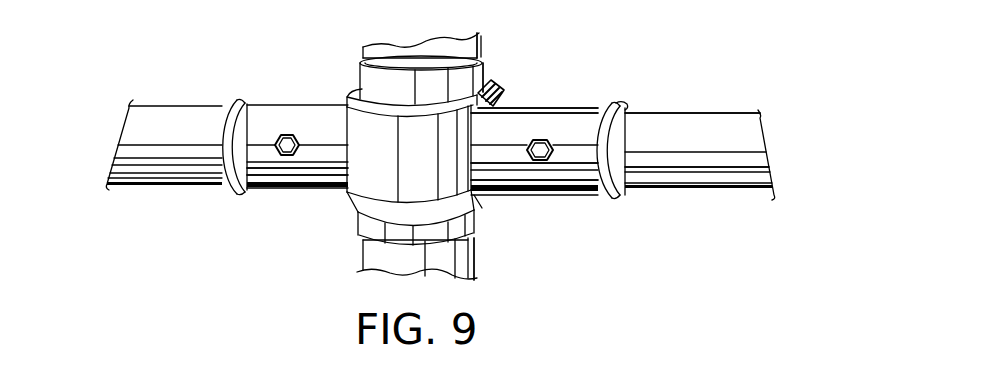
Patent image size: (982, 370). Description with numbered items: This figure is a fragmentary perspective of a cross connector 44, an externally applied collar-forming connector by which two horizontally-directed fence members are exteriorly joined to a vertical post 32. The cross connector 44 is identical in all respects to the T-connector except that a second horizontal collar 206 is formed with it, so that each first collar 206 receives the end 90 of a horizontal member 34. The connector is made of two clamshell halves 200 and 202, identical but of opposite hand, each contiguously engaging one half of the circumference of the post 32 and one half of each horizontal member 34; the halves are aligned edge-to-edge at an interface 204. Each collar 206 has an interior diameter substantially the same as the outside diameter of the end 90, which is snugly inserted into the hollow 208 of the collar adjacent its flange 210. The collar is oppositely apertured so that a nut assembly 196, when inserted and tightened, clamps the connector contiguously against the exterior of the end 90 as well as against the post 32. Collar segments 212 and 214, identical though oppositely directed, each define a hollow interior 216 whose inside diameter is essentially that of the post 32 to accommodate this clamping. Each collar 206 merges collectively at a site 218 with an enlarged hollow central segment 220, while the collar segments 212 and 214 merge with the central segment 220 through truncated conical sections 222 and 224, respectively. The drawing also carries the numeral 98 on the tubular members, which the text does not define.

The vertical post 32 is at (486, 40).
The horizontal member 34 is at (153, 103).
The cross connector 44 is at (508, 84).
The end of horizontal member 90 is at (212, 153).
The tubular member 98 is at (164, 143).
The nut assembly 196 is at (287, 131).
The clamshell half 200 is at (490, 64).
The clamshell half 202 is at (507, 167).
The interface 204 is at (534, 110).
The first collar 206 is at (262, 172).
The hollow of the sleeve 208 is at (622, 122).
The flange 210 is at (237, 103).
The collar segment 212 is at (403, 95).
The collar segment 214 is at (438, 228).
The hollow interior 216 is at (388, 66).
The merge site 218 is at (473, 137).
The central segment 220 is at (432, 159).
The truncated conical section 222 is at (428, 119).
The truncated conical section 224 is at (437, 226).